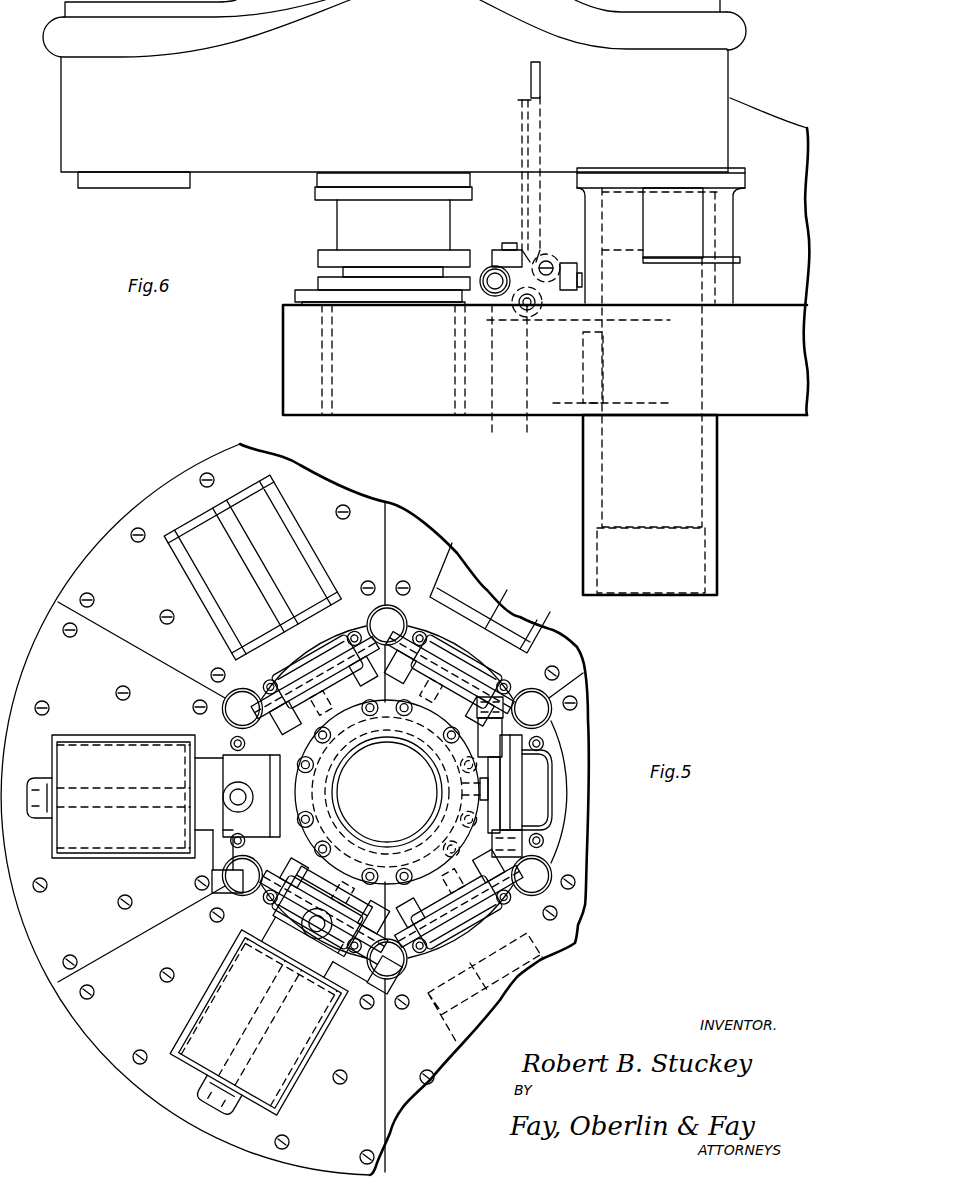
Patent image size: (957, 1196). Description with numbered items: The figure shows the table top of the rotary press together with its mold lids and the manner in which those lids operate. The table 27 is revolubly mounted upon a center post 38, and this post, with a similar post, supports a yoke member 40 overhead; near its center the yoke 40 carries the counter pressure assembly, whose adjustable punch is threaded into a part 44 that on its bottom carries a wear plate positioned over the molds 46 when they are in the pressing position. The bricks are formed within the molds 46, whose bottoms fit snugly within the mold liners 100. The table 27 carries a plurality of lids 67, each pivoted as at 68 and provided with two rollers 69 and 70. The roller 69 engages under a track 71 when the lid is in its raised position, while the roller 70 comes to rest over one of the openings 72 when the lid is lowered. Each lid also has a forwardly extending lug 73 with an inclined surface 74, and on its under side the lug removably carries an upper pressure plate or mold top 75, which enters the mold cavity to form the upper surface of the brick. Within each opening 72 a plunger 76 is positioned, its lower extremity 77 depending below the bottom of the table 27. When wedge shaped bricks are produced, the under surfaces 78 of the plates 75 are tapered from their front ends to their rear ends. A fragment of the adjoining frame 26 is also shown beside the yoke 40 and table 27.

In FIG. 6, the frame 26 is at (770, 127).
In FIG. 6, the table 27 is at (783, 403).
In FIG. 5, the table 27 is at (110, 1030).
In FIG. 5, the center post 38 is at (387, 792).
In FIG. 6, the yoke member 40 is at (394, 94).
In FIG. 6, the part 44 is at (320, 280).
In FIG. 5, the molds 46 is at (252, 567).
In FIG. 6, the lids 67 is at (540, 145).
In FIG. 5, the lids 67 is at (92, 835).
In FIG. 6, the pivot 68 is at (533, 300).
In FIG. 5, the pivot 68 is at (253, 768).
In FIG. 6, the roller 69 is at (488, 264).
In FIG. 5, the roller 69 is at (220, 805).
In FIG. 6, the roller 70 is at (488, 280).
In FIG. 5, the roller 70 is at (205, 875).
In FIG. 6, the track 71 is at (730, 262).
In FIG. 5, the track 71 is at (387, 792).
In FIG. 6, the openings 72 is at (490, 363).
In FIG. 5, the openings 72 is at (240, 690).
In FIG. 6, the lug 73 is at (295, 293).
In FIG. 5, the lug 73 is at (30, 793).
In FIG. 5, the inclined surface 74 is at (210, 1097).
In FIG. 6, the upper pressure plates or mold tops 75 is at (523, 143).
In FIG. 5, the upper pressure plates or mold tops 75 is at (112, 823).
In FIG. 6, the plunger 76 is at (510, 365).
In FIG. 5, the plunger 76 is at (387, 610).
In FIG. 6, the lower extremities 77 is at (523, 417).
In FIG. 6, the under surfaces 78 is at (515, 108).
In FIG. 5, the mold liners 100 is at (310, 560).